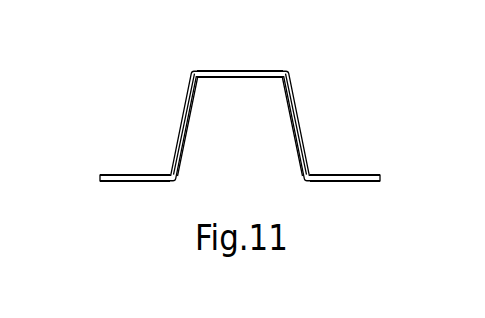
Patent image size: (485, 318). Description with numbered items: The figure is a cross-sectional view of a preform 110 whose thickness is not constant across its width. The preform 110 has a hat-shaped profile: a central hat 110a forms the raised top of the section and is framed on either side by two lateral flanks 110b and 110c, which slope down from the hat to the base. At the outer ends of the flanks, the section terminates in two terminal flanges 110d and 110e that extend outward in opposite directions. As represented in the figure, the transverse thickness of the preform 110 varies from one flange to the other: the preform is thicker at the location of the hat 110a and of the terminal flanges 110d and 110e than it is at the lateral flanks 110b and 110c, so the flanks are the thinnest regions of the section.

The preform 110 is at (308, 53).
The hat 110a is at (235, 70).
The lateral flank 110b is at (181, 110).
The lateral flank 110c is at (302, 117).
The terminal flange 110d is at (121, 174).
The terminal flange 110e is at (350, 174).